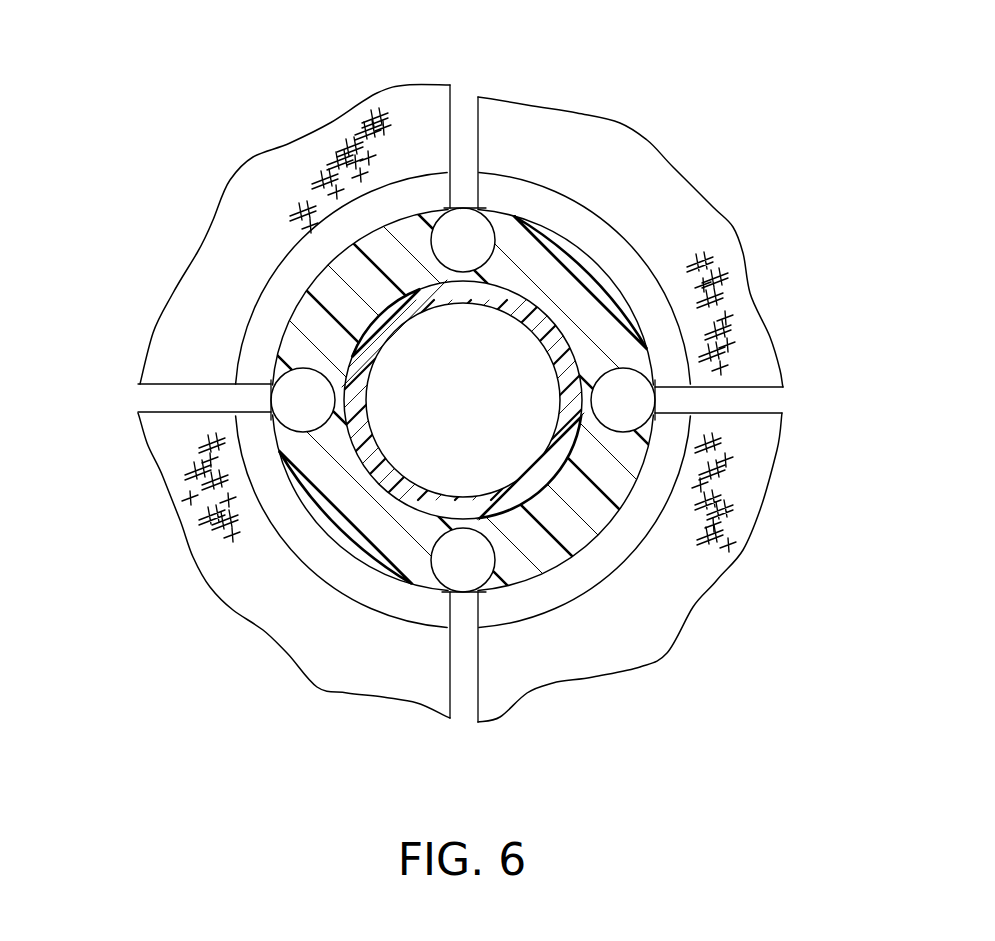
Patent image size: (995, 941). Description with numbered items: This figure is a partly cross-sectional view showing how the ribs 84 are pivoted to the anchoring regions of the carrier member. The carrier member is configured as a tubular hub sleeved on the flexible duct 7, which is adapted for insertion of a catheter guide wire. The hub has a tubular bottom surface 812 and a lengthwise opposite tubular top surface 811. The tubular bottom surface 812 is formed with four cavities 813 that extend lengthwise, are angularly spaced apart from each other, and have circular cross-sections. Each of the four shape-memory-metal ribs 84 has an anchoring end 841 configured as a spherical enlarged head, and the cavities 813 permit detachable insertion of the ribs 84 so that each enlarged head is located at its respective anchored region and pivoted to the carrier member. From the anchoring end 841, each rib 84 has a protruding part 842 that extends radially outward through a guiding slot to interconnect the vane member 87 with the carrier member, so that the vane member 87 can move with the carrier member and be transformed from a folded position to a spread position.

The duct 7 is at (375, 463).
The rib 84 is at (457, 364).
The anchoring end 841 is at (253, 523).
The protruding part 842 is at (175, 404).
The tubular top surface 811 is at (567, 237).
The tubular bottom surface 812 is at (573, 280).
The cavity 813 is at (287, 343).
The vane member 87 is at (608, 638).